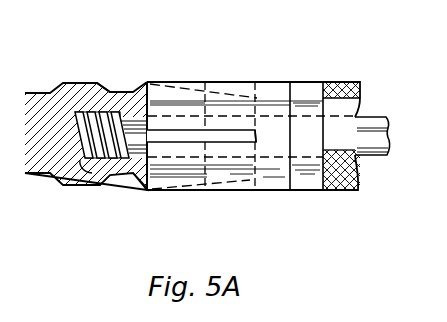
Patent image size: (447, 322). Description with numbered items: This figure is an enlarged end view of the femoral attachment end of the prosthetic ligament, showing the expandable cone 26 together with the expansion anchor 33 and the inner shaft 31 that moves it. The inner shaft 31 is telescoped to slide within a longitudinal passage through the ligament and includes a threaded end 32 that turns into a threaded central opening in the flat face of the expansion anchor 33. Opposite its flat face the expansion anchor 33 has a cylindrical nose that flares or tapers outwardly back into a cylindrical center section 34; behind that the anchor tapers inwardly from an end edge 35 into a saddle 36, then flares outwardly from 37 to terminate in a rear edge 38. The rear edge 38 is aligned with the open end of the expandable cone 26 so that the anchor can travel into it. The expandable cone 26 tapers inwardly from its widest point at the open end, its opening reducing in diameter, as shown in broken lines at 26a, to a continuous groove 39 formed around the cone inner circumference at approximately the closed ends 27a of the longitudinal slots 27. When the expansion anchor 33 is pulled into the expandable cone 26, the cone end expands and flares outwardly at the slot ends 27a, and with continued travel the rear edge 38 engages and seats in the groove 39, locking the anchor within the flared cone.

The expandable cone 26 is at (245, 189).
The reducing opening 26a is at (204, 87).
The longitudinal slots 27 is at (212, 130).
The closed slot ends 27a is at (283, 82).
The inner shaft 31 is at (370, 155).
The threaded end 32 is at (70, 178).
The expansion anchor 33 is at (63, 76).
The cylindrical center section 34 is at (80, 82).
The end edge 35 is at (100, 83).
The saddle 36 is at (112, 177).
The outward flare 37 is at (139, 181).
The rear edge 38 is at (148, 82).
The continuous groove 39 is at (256, 138).